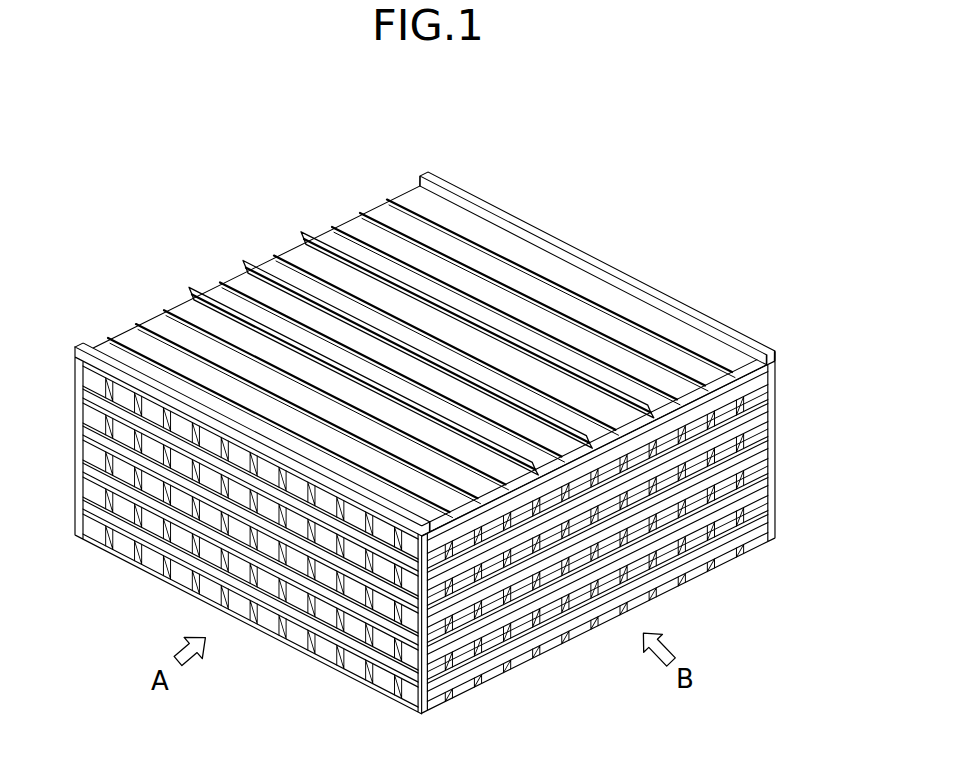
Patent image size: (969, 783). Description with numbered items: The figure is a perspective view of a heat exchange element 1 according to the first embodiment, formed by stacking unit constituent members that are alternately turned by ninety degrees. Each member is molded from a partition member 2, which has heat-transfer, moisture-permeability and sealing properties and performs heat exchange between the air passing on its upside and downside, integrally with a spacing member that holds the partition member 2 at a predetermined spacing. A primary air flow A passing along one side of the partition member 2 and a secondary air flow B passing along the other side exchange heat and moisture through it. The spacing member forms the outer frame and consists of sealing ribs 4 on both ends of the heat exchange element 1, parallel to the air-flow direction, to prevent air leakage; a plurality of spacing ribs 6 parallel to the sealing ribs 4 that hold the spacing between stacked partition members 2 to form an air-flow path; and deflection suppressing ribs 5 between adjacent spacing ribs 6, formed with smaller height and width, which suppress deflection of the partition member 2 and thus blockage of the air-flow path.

The heat exchange element 1 is at (620, 212).
The partition member 2 is at (362, 230).
The sealing rib 4 is at (427, 174).
The deflection suppressing rib 5 is at (246, 262).
The spacing rib 6 is at (191, 289).